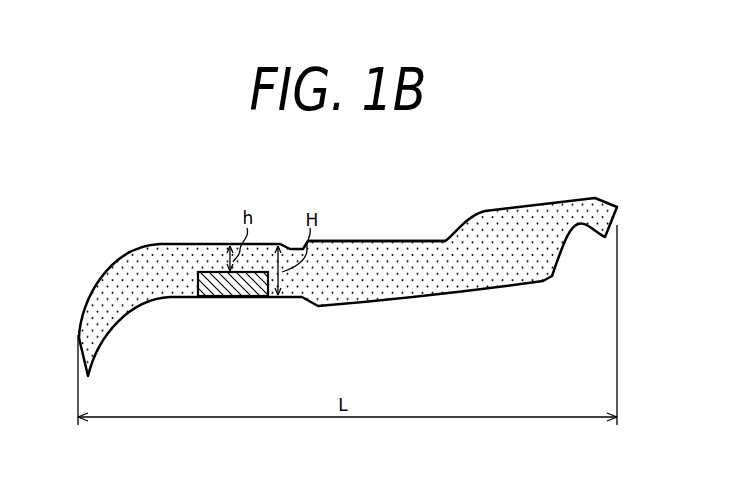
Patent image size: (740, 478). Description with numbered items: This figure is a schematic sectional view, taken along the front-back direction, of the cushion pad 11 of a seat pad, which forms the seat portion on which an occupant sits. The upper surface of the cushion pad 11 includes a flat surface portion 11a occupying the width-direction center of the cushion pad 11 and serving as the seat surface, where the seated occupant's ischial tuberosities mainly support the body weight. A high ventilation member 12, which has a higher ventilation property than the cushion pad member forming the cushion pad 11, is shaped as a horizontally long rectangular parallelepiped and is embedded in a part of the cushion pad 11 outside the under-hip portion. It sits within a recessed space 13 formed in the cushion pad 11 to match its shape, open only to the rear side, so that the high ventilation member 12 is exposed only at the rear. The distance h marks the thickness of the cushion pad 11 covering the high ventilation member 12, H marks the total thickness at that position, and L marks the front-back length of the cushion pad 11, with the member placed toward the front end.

The cushion pad 11 is at (527, 204).
The flat surface portion 11a is at (375, 240).
The high ventilation member 12 is at (224, 296).
The recessed space 13 is at (260, 297).